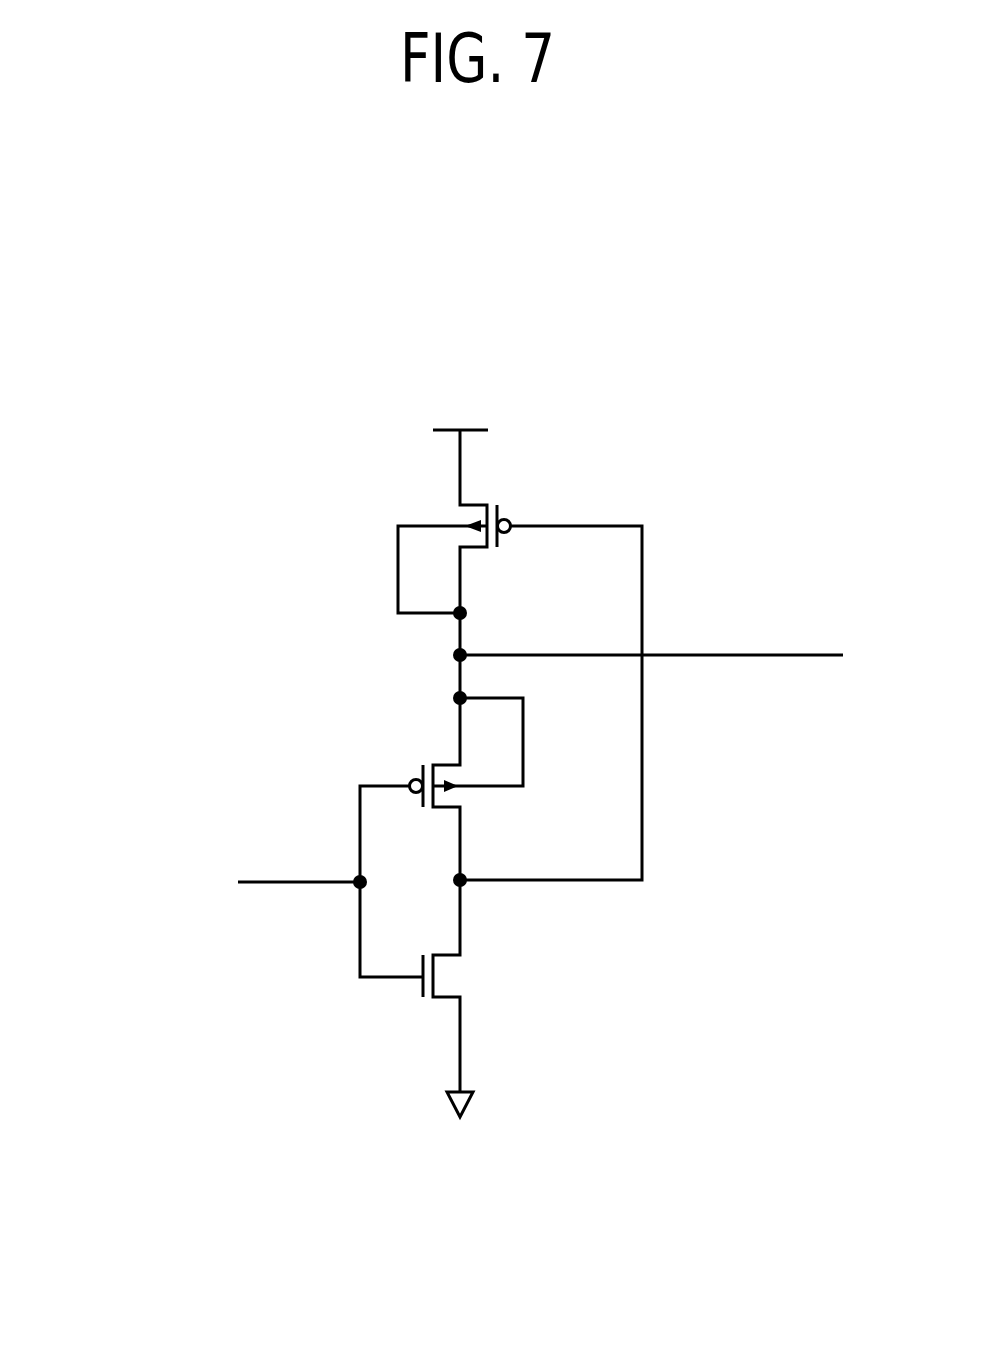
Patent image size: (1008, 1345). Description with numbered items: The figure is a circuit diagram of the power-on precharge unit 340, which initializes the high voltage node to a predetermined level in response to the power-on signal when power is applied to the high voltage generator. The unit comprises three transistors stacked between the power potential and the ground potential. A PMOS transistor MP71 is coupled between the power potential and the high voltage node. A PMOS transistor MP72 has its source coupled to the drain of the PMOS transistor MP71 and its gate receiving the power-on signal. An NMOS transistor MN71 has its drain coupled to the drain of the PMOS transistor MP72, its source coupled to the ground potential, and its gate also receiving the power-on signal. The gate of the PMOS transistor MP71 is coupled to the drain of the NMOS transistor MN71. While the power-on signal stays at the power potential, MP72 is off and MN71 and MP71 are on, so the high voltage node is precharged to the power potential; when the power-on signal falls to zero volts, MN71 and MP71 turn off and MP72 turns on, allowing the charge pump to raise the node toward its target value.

The power-on precharge unit 340 is at (800, 317).
The PMOS transistor MP71 is at (520, 670).
The PMOS transistor MP72 is at (424, 837).
The NMOS transistor MN71 is at (491, 974).